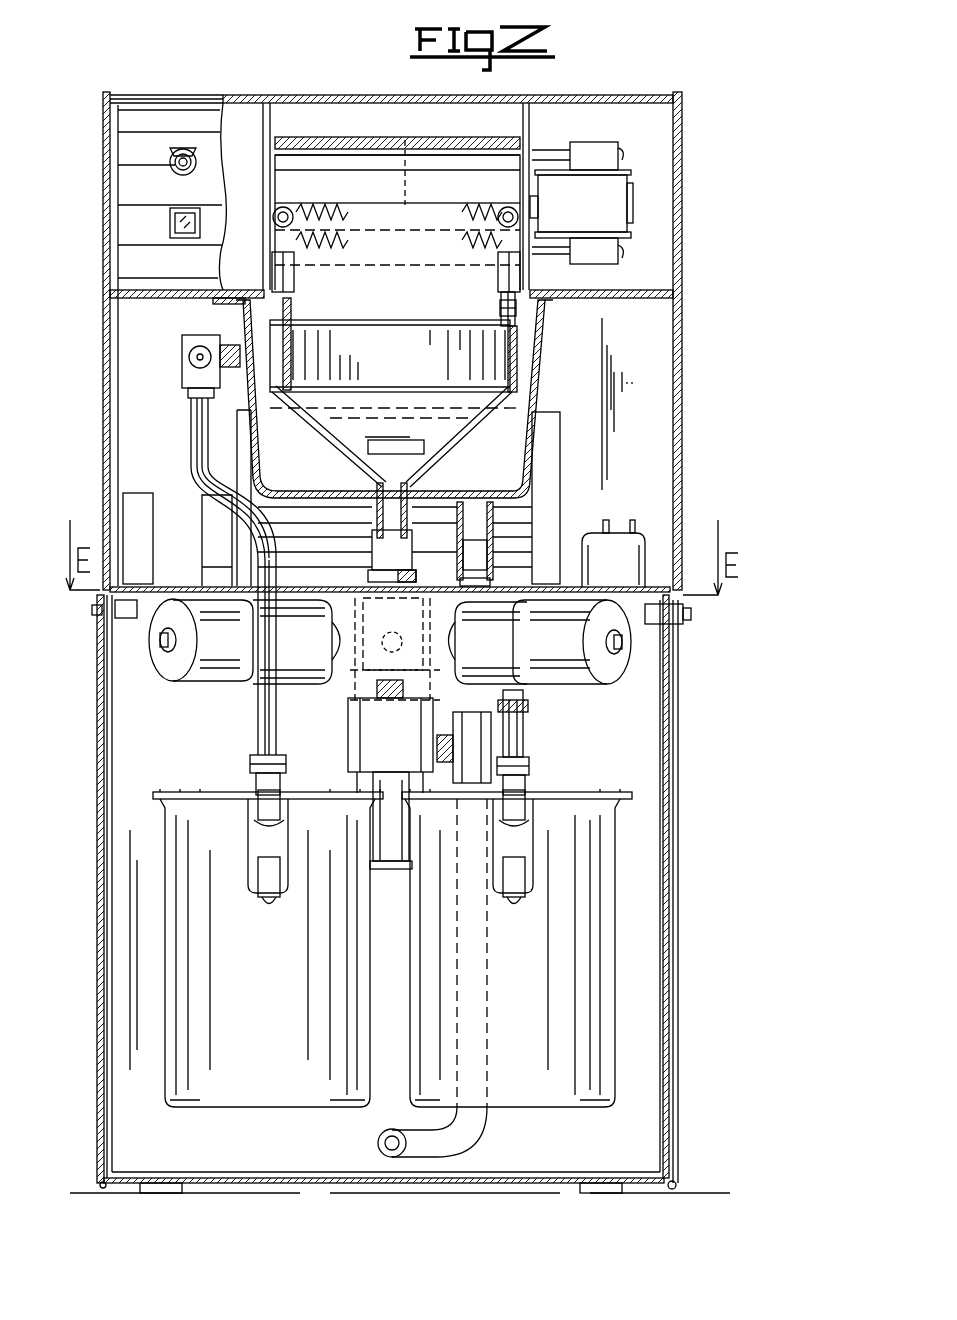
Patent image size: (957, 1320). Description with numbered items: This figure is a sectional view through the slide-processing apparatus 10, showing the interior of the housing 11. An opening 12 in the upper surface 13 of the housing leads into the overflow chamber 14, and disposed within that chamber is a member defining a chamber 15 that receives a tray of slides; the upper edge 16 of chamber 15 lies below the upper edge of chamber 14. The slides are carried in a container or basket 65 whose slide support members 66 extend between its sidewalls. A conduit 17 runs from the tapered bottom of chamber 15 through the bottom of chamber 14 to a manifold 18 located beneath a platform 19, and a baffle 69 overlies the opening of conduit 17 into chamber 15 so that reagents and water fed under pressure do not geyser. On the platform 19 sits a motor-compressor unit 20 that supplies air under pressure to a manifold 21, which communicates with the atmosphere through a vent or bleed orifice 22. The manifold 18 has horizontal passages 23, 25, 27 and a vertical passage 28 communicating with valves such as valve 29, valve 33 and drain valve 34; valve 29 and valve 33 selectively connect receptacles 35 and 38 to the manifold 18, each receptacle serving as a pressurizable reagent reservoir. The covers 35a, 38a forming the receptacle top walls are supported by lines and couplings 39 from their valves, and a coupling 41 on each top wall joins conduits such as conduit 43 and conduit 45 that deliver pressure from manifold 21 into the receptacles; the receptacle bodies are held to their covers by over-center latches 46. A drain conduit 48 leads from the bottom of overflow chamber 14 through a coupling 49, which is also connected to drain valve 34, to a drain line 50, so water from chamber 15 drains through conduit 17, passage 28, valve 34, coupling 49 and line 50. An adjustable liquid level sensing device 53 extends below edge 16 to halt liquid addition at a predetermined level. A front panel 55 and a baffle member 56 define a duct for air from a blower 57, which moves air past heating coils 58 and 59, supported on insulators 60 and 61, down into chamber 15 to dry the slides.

The apparatus 10 is at (716, 148).
The housing 11 is at (682, 398).
The opening 12 is at (417, 295).
The upper surface 13 is at (612, 300).
The overflow chamber 14 is at (530, 398).
The chamber 15 is at (345, 408).
The upper edge 16 is at (270, 318).
The conduit 17 is at (408, 506).
The manifold 18 is at (345, 672).
The platform 19 is at (610, 588).
The motor-compressor unit 20 is at (545, 500).
The manifold 21 is at (182, 366).
The vent or bleed orifice 22 is at (202, 350).
The horizontal passage 23 is at (338, 628).
The horizontal passage 25 is at (395, 634).
The horizontal passage 27 is at (452, 668).
The vertical passage 28 is at (365, 696).
The valve 29 is at (240, 652).
The valve 33 is at (564, 654).
The drain valve 34 is at (375, 753).
The receptacle 35 is at (276, 970).
The cover 35a is at (166, 795).
The receptacle 38 is at (529, 968).
The cover 38a is at (618, 795).
The line and couplings 39 is at (258, 738).
The coupling 41 is at (286, 766).
The conduit 43 is at (198, 488).
The conduit 45 is at (191, 443).
The over-center latch 46 is at (262, 893).
The drain conduit 48 is at (470, 535).
The coupling 49 is at (447, 760).
The drain line 50 is at (468, 1128).
The liquid level sensing device 53 is at (512, 316).
The panel 55 is at (205, 185).
The baffle member 56 is at (416, 222).
The blower 57 is at (442, 147).
The heating coil 58 is at (325, 210).
The heating coil 59 is at (318, 262).
The insulator 60 is at (287, 208).
The insulator 61 is at (289, 282).
The container or basket 65 is at (510, 358).
The slide support members 66 is at (478, 395).
The baffle 69 is at (430, 458).